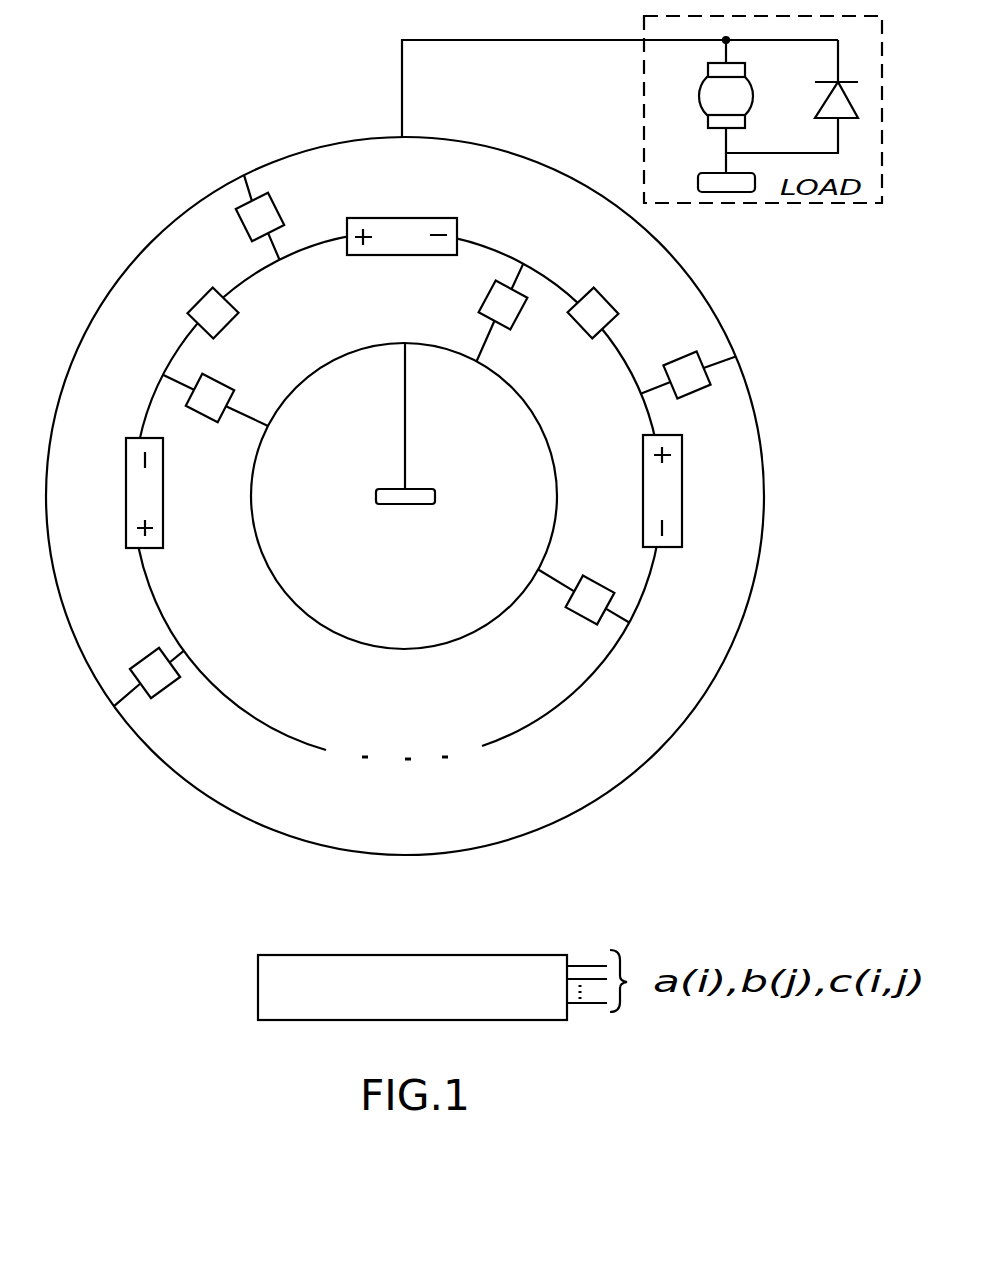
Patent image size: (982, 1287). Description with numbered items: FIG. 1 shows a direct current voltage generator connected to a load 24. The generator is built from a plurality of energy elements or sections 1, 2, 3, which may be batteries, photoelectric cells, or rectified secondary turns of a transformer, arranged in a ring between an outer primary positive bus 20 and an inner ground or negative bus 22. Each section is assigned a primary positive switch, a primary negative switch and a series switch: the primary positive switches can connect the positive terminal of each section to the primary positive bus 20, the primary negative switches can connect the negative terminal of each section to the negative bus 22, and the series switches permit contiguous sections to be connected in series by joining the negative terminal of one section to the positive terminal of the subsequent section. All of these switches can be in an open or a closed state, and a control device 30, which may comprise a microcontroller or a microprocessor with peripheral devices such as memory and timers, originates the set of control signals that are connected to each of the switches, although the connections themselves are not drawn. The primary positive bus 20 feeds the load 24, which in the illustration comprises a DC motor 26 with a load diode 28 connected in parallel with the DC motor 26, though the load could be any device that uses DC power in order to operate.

The primary positive bus 20 is at (164, 230).
The negative bus 22 is at (340, 355).
The energy section 1 is at (126, 488).
The energy section 2 is at (415, 226).
The energy section 3 is at (683, 483).
The load 24 is at (727, 192).
The DC motor 26 is at (703, 98).
The load diode 28 is at (820, 107).
The control device 30 is at (370, 970).